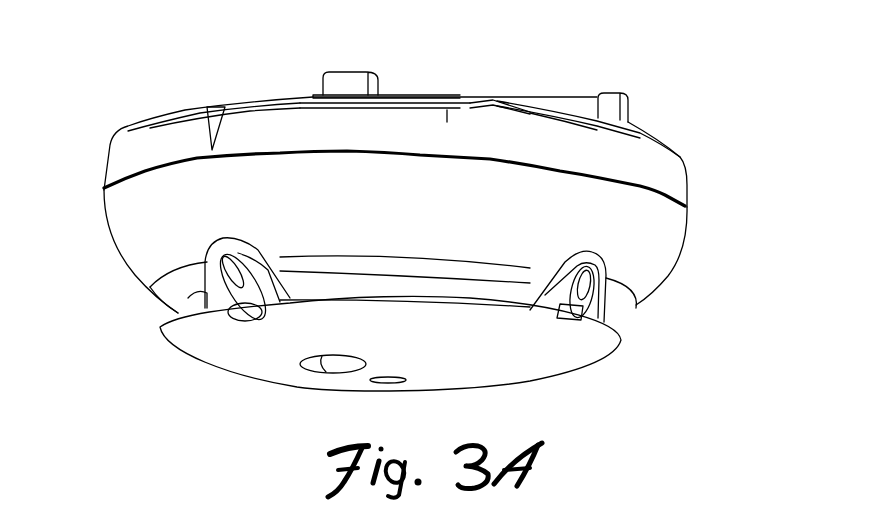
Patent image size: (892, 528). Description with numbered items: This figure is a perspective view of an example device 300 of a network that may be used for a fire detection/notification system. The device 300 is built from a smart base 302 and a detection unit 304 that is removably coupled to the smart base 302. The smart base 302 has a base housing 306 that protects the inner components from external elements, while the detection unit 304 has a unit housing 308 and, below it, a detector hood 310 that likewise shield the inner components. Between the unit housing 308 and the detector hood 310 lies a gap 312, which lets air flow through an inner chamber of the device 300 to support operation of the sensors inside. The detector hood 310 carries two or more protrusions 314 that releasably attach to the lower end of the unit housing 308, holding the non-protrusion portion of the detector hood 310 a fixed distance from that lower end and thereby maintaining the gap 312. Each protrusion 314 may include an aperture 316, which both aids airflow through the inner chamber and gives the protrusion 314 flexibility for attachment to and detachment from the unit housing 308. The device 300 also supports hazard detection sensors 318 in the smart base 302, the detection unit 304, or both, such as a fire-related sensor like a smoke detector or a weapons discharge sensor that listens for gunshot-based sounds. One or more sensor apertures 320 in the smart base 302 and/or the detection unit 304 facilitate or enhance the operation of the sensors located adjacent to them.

The device 300 is at (203, 66).
The smart base 302 is at (181, 96).
The detection unit 304 is at (700, 253).
The base housing 306 is at (686, 178).
The unit housing 308 is at (120, 220).
The detector hood 310 is at (200, 353).
The gap 312 is at (173, 313).
The protrusions 314 is at (252, 247).
The aperture 316 is at (210, 258).
The hazard detection sensors 318 is at (605, 309).
The sensor apertures 320 is at (350, 368).